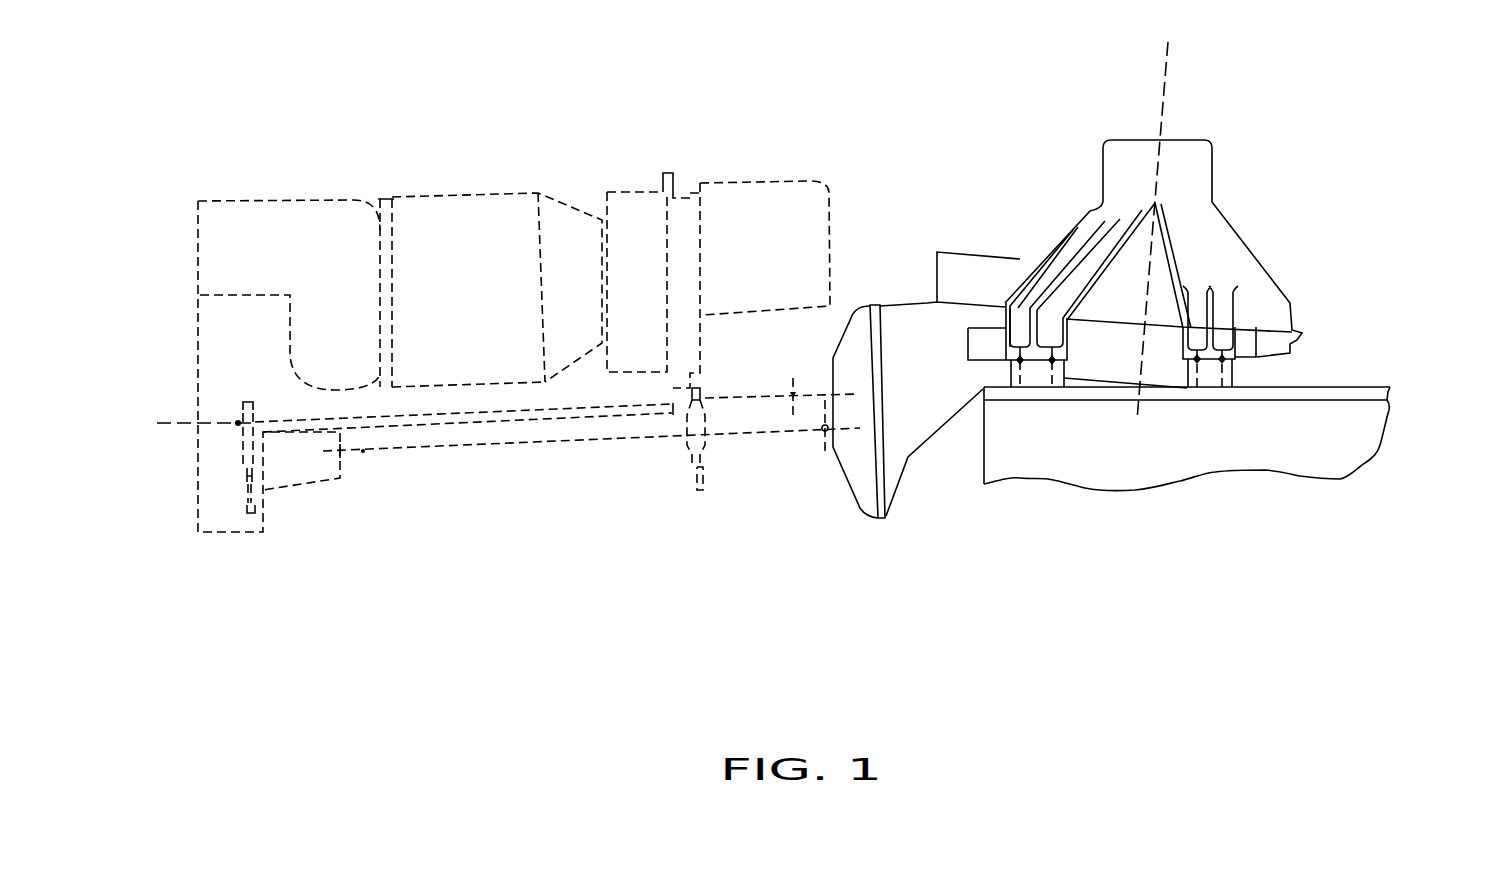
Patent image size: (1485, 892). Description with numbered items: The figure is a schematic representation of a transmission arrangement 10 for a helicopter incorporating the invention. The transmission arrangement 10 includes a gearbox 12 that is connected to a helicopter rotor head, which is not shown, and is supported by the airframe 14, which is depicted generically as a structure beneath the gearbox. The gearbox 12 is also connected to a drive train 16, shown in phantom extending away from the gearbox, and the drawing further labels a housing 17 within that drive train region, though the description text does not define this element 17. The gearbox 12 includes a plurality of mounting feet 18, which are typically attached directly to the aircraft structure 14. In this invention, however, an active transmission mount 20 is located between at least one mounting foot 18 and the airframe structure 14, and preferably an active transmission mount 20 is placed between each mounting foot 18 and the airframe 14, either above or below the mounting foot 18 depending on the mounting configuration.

The transmission arrangement 10 is at (943, 178).
The gearbox 12 is at (1190, 173).
The airframe 14 is at (1333, 443).
The drive train 16 is at (502, 473).
The housing 17 is at (450, 228).
The mounting foot 18 is at (1022, 318).
The active transmission mount 20 is at (968, 340).